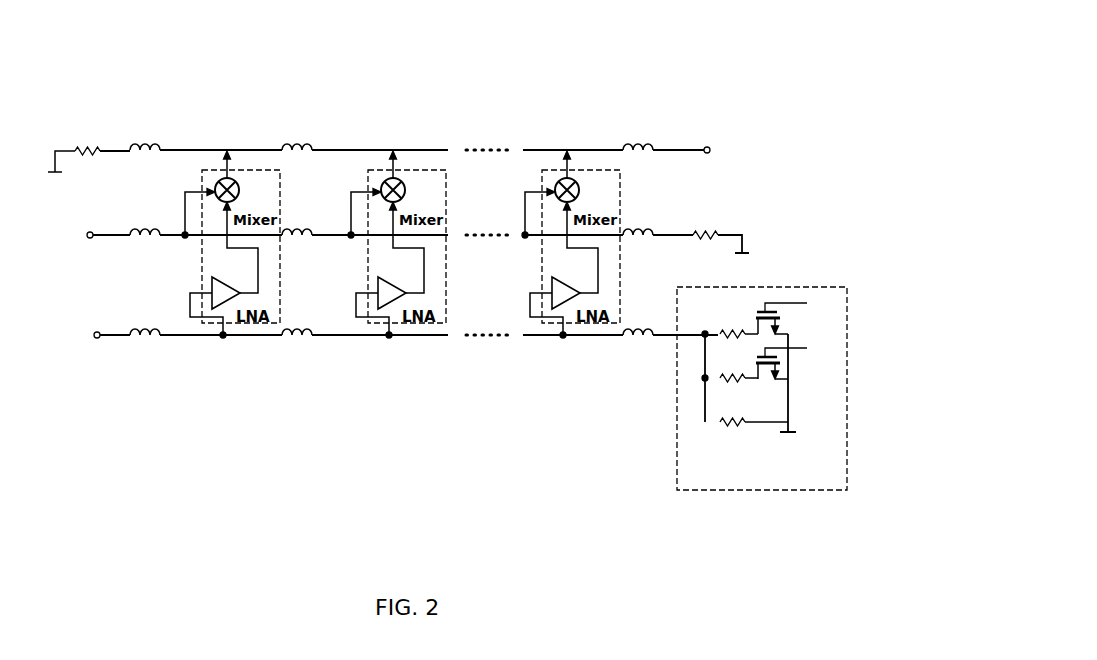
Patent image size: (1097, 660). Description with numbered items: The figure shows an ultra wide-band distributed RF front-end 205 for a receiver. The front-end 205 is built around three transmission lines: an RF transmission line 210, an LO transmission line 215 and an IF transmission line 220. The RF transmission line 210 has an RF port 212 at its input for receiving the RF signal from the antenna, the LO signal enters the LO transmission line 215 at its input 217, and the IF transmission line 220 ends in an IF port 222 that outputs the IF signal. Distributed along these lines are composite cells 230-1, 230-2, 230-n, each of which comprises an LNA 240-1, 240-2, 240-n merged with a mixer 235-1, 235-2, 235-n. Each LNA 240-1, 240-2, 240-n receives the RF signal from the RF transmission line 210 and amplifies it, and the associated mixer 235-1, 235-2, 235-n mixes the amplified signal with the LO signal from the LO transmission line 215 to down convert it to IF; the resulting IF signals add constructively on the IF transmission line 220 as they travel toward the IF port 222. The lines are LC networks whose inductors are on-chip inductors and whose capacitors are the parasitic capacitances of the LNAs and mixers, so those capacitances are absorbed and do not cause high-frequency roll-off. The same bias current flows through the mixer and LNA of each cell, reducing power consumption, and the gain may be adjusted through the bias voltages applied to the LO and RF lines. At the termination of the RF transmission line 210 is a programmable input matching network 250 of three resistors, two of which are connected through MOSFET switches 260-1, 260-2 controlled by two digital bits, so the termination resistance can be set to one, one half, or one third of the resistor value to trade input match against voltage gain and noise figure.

The ultra wide-band distributed RF front-end 205 is at (760, 29).
The RF transmission line 210 is at (523, 337).
The RF port 212 is at (115, 340).
The LO transmission line 215 is at (668, 235).
The LO input terminal 217 is at (114, 243).
The IF transmission line 220 is at (612, 160).
The IF port 222 is at (710, 155).
The composite cell 230-1 is at (259, 163).
The composite cell 230-2 is at (423, 162).
The composite cell 230-n is at (600, 160).
The mixer 235-1 is at (218, 175).
The mixer 235-2 is at (383, 176).
The mixer 235-n is at (556, 176).
The LNA 240-1 is at (222, 306).
The LNA 240-2 is at (392, 306).
The LNA 240-n is at (562, 306).
The programmable input matching network 250 is at (773, 490).
The switch 260-1 is at (772, 290).
The switch 260-2 is at (802, 368).